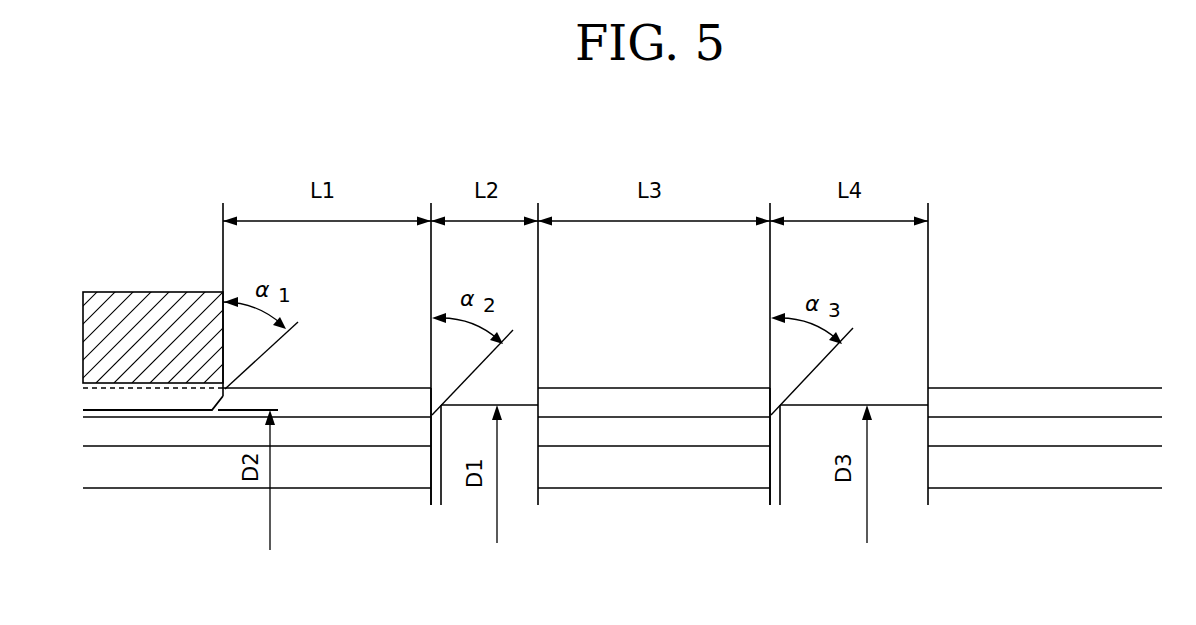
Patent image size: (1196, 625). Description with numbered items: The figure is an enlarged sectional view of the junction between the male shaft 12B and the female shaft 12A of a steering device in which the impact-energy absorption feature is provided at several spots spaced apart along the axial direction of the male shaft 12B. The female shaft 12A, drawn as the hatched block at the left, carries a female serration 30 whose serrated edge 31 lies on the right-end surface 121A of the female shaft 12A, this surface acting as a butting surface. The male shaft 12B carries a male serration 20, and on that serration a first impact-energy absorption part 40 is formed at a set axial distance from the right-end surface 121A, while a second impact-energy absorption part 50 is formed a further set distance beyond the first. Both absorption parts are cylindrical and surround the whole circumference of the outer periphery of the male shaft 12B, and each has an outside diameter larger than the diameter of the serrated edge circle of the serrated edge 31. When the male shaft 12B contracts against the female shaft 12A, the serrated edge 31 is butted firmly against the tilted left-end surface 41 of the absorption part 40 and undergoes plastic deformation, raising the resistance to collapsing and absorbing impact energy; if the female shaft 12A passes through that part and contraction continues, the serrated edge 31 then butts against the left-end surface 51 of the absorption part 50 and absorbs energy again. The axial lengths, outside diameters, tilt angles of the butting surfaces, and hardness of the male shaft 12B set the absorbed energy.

The female shaft 12A is at (107, 306).
The right-end surface (butting surface) 121A is at (225, 242).
The male shaft 12B is at (647, 350).
The male serration 20 is at (357, 387).
The female serration 30 is at (170, 428).
The serrated edge 31 is at (122, 410).
The impact-energy absorption part 40 is at (508, 404).
The left-end surface (butting surface) 41 is at (430, 372).
The impact-energy absorption part 50 is at (884, 404).
The left-end surface (butting surface) 51 is at (769, 362).